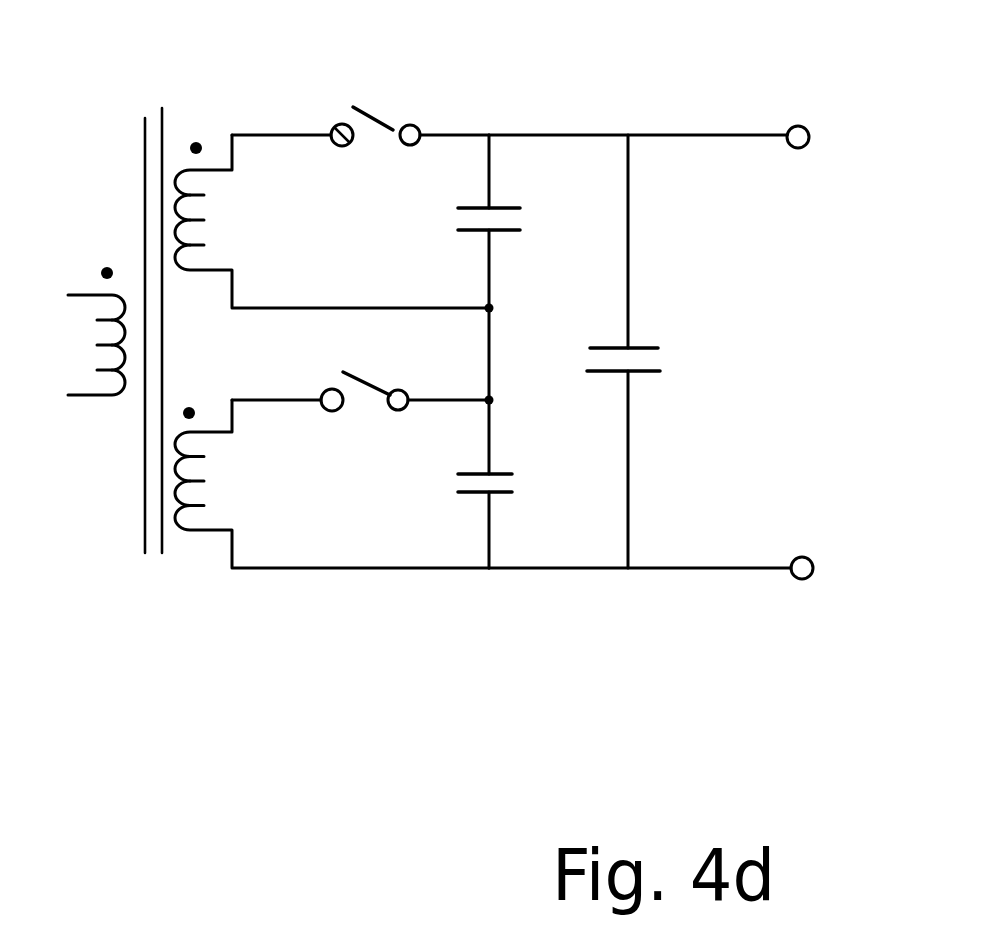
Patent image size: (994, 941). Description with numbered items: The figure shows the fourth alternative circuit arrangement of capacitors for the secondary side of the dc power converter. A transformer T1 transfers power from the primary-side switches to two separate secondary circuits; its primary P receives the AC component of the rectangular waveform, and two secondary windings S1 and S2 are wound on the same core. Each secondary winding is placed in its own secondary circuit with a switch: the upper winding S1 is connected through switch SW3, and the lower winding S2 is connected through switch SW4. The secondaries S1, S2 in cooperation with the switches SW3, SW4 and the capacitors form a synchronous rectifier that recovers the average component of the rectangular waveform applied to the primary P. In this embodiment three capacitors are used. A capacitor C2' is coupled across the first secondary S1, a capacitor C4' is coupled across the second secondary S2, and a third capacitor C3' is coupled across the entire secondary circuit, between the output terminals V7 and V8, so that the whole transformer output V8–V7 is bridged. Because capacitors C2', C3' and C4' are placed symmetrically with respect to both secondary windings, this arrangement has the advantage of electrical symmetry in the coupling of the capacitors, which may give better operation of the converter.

The transformer T1 is at (140, 296).
The primary P is at (84, 331).
The secondary winding S1 is at (332, 221).
The secondary winding S2 is at (332, 484).
The switch SW3 is at (360, 156).
The switch SW4 is at (360, 425).
The capacitor C2' is at (518, 224).
The capacitor C3' is at (606, 351).
The capacitor C4' is at (513, 438).
The output terminal V8 is at (806, 122).
The output terminal V7 is at (807, 553).